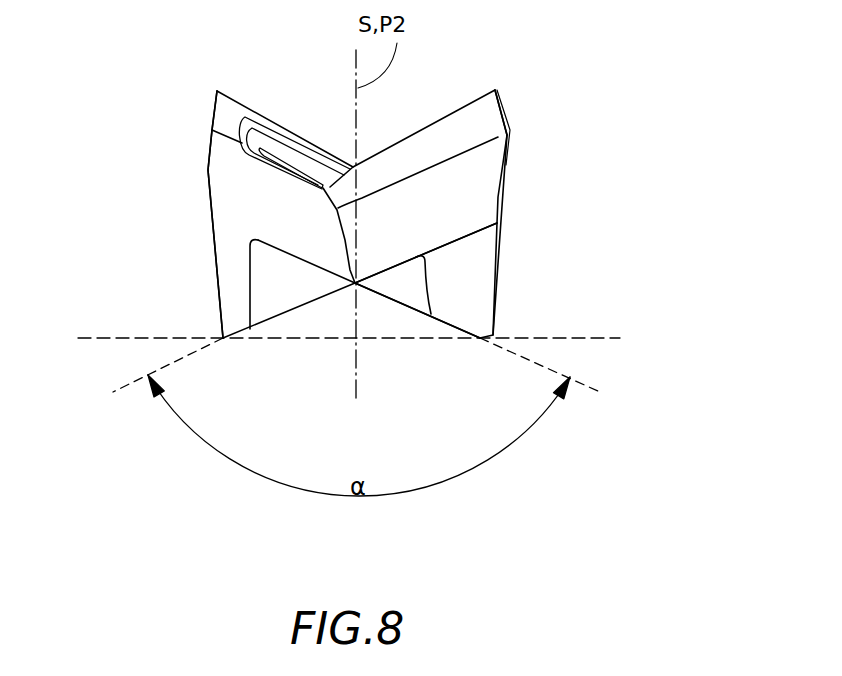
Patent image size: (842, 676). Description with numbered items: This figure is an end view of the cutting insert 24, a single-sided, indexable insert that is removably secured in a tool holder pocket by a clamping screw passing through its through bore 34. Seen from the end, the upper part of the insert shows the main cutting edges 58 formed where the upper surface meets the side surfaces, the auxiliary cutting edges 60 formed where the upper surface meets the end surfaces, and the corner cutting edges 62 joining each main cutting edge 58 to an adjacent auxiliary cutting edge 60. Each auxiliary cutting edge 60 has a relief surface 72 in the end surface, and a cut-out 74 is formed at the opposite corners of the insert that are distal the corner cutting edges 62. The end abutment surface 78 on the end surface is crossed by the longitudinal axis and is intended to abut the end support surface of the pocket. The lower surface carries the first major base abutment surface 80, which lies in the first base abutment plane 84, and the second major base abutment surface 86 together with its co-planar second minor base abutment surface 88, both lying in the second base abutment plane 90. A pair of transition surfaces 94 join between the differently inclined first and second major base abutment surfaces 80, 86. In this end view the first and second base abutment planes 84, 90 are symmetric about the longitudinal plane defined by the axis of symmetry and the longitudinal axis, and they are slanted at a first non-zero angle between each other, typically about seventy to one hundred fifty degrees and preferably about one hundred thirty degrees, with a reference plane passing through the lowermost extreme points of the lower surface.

The cutting insert 24 is at (575, 123).
The through bore 34 is at (408, 282).
The main cutting edge 58 is at (212, 107).
The auxiliary cutting edge 60 is at (236, 91).
The corner cutting edge 62 is at (217, 91).
The relief surface 72 is at (428, 150).
The cut-out 74 is at (226, 199).
The end abutment surface 78 is at (470, 187).
The first major base abutment surface 80 is at (485, 226).
The first base abutment plane 84 is at (113, 392).
The second major base abutment surface 86 is at (440, 316).
The second minor base abutment surface 88 is at (277, 250).
The second base abutment plane 90 is at (594, 386).
The transition surface 94 is at (474, 280).